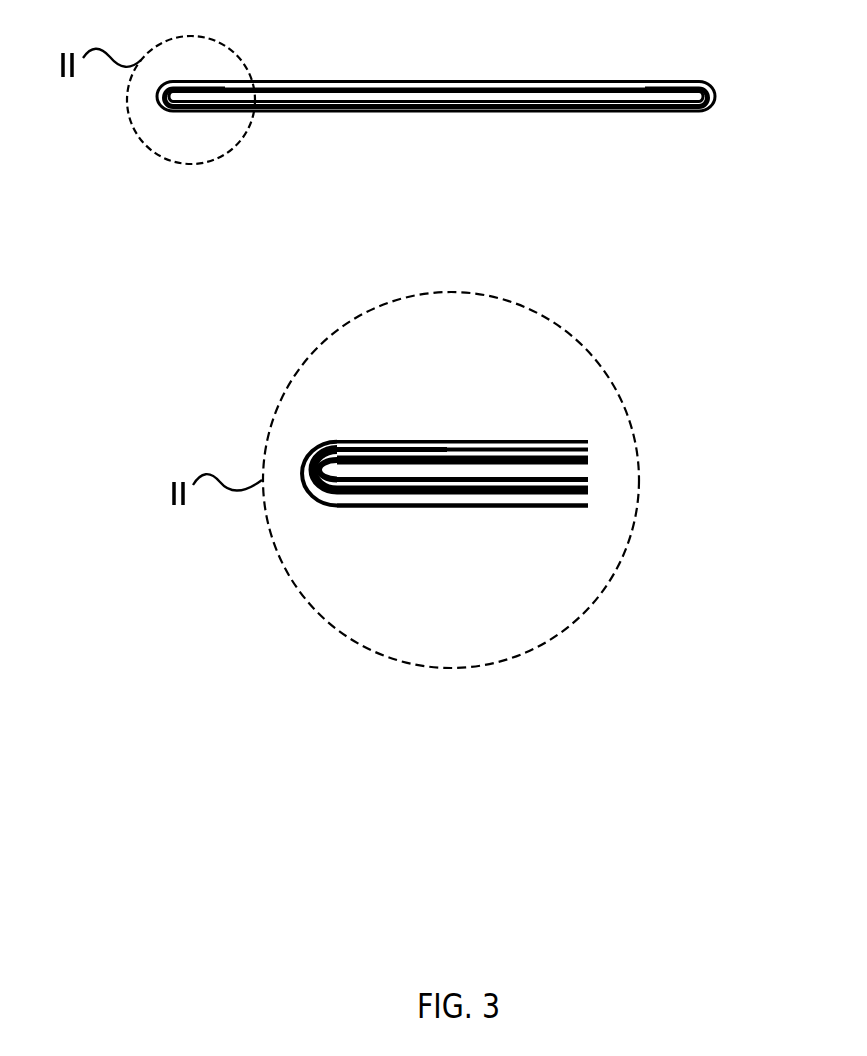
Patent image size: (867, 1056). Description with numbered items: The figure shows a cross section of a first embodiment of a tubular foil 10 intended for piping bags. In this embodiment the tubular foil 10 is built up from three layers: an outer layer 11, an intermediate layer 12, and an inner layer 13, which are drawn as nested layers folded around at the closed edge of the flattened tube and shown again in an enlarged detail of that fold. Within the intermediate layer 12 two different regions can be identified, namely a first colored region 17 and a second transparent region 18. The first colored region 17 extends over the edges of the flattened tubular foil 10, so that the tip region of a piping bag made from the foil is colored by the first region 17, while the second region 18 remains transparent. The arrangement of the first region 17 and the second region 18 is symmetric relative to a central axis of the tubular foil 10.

The tubular foil 10 is at (360, 50).
The outer layer 11 is at (340, 507).
The intermediate layer 12 is at (580, 450).
The inner layer 13 is at (577, 485).
The first colored region 17 is at (430, 110).
The second transparent region 18 is at (558, 90).